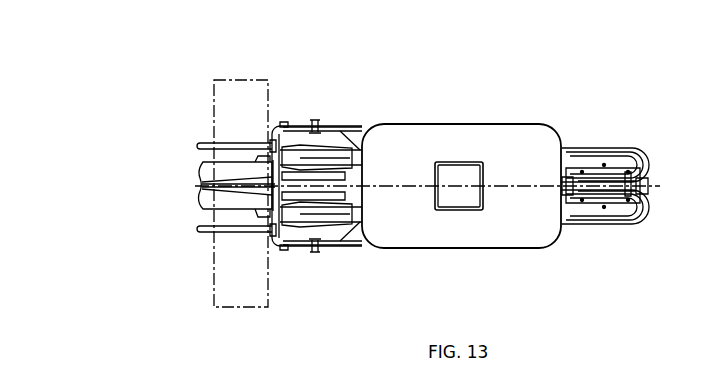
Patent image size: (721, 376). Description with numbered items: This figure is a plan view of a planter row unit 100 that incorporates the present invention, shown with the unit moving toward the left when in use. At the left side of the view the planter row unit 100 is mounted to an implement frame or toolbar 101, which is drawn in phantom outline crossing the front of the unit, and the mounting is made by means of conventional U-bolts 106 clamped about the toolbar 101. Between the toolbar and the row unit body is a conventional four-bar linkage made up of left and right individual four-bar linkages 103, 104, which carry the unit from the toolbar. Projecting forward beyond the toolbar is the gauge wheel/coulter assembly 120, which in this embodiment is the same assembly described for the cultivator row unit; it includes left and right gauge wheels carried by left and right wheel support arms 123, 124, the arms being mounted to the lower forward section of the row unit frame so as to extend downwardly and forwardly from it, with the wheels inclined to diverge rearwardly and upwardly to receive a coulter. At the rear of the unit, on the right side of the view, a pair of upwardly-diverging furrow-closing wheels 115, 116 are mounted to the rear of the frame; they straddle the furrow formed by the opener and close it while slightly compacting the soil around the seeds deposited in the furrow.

The planter row unit 100 is at (370, 256).
The implement frame or toolbar 101 is at (238, 298).
The left four-bar linkage 103 is at (320, 253).
The right four-bar linkage 104 is at (345, 124).
The U-bolts 106 is at (212, 143).
The furrow-closing wheel 115 is at (625, 220).
The furrow-closing wheel 116 is at (632, 152).
The gauge wheel/coulter assembly 120 is at (192, 198).
The left wheel support arm 123 is at (343, 223).
The right wheel support arm 124 is at (332, 150).